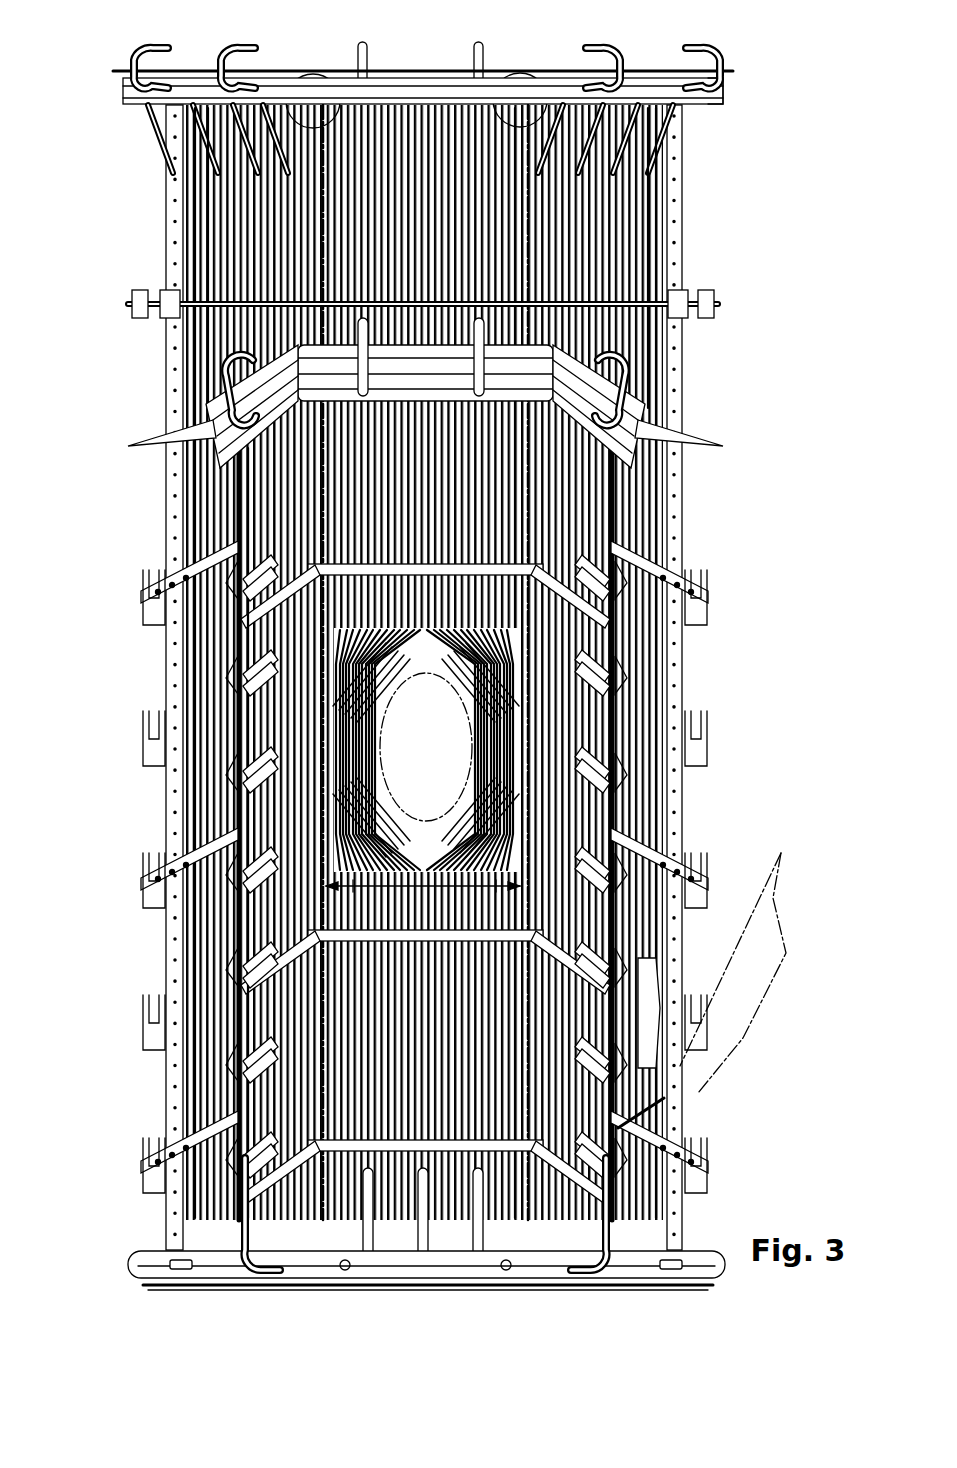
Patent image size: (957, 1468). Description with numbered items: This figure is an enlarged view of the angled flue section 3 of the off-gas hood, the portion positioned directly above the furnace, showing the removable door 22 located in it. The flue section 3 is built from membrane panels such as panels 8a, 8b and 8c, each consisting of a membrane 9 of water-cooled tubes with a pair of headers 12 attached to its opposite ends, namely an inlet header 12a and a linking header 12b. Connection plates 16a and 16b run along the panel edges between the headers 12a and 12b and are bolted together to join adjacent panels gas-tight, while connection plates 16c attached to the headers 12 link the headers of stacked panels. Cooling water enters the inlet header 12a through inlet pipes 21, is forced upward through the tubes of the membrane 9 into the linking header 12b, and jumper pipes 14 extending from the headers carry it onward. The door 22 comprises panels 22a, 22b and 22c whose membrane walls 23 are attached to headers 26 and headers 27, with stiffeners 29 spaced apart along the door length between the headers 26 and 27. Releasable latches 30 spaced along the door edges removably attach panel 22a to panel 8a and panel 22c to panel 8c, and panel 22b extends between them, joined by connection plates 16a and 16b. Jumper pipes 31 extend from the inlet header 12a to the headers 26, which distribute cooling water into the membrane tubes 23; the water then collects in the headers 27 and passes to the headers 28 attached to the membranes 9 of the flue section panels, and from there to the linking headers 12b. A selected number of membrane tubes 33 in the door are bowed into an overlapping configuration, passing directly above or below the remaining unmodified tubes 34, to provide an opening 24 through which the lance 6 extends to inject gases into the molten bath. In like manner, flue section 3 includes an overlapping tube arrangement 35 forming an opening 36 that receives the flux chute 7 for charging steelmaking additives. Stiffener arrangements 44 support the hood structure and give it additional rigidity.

The angled flue section 3 is at (98, 176).
The lance 6 is at (385, 728).
The flux chute 7 is at (760, 1000).
The panel 8a is at (675, 252).
The panel 8b is at (650, 222).
The panel 8c is at (205, 190).
The membrane 9 is at (625, 185).
The header 12 is at (140, 88).
The inlet header 12a is at (145, 1250).
The linking header 12b is at (712, 92).
The jumper pipe 14 is at (122, 46).
The connection plate 16a is at (305, 118).
The connection plate 16b is at (322, 112).
The connection plate 16c is at (168, 72).
The inlet pipe 21 is at (165, 1270).
The door 22 is at (300, 797).
The panel 22a is at (580, 512).
The panel 22b is at (480, 457).
The panel 22c is at (270, 532).
The membrane wall 23 is at (350, 450).
The opening 24 is at (439, 731).
The header 26 is at (595, 1240).
The header 27 is at (705, 425).
The header 28 is at (640, 335).
The stiffener 29 is at (240, 622).
The releasable latch 30 is at (600, 802).
The jumper pipe 31 is at (655, 382).
The membrane tube 33 is at (420, 870).
The unmodified tube 34 is at (380, 800).
The overlapping tube arrangement 35 is at (655, 1105).
The opening 36 is at (650, 1058).
The stiffener arrangement 44 is at (195, 122).